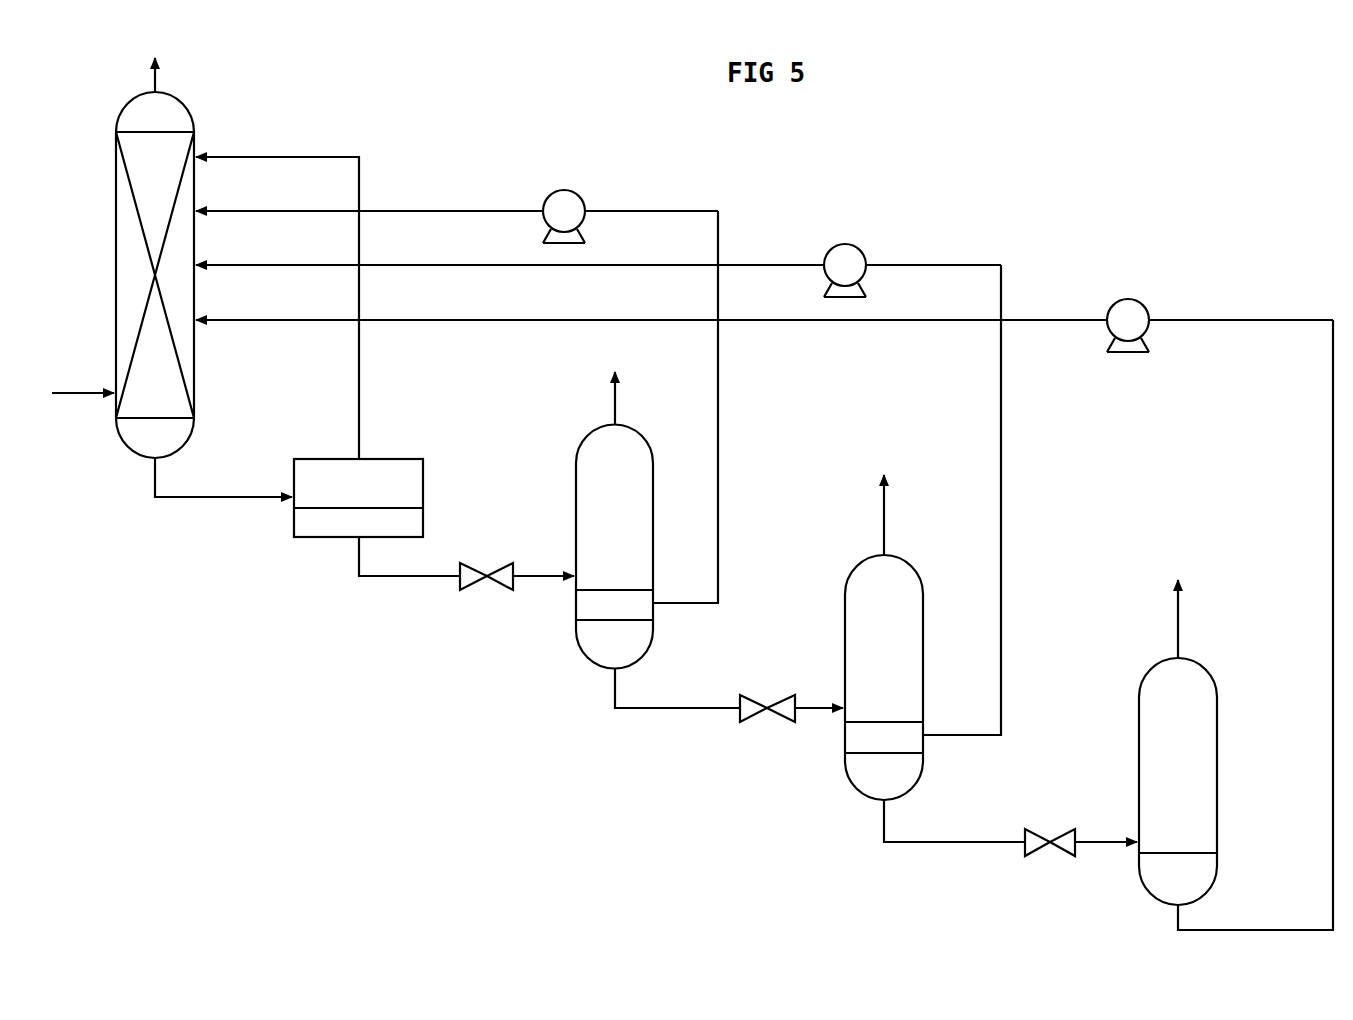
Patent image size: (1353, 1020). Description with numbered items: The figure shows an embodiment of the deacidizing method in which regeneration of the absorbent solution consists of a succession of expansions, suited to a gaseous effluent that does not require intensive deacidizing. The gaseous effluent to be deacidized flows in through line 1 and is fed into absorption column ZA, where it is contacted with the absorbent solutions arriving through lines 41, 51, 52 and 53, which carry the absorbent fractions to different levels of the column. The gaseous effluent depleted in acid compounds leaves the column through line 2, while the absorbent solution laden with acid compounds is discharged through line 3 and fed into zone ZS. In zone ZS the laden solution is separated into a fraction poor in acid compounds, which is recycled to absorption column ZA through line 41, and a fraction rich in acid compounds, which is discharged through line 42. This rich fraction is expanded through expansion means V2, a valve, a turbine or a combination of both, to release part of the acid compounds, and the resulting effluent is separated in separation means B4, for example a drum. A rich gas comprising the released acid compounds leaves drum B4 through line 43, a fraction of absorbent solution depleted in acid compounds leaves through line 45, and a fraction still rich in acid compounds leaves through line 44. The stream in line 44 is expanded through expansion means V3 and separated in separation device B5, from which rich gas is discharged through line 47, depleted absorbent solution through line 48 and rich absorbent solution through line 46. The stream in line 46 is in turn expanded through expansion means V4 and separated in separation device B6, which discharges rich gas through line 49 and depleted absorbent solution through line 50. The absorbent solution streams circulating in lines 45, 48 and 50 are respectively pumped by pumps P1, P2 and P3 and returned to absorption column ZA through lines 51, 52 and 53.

The line 1 is at (62, 395).
The line 2 is at (156, 78).
The line 3 is at (190, 498).
The absorption column ZA is at (116, 183).
The zone ZS is at (423, 490).
The line 41 is at (359, 375).
The line 42 is at (378, 578).
The line 43 is at (616, 390).
The line 44 is at (642, 710).
The line 45 is at (718, 448).
The line 46 is at (912, 844).
The line 47 is at (885, 505).
The line 48 is at (1001, 423).
The line 49 is at (1179, 610).
The line 50 is at (1332, 450).
The line 51 is at (243, 213).
The line 52 is at (246, 267).
The line 53 is at (256, 322).
The separation means B4 is at (582, 438).
The separation device B5 is at (842, 601).
The separation device B6 is at (1138, 680).
The expansion means V2 is at (486, 561).
The expansion means V3 is at (767, 694).
The expansion means V4 is at (1050, 827).
The pump P1 is at (564, 203).
The pump P2 is at (845, 257).
The pump P3 is at (1128, 312).